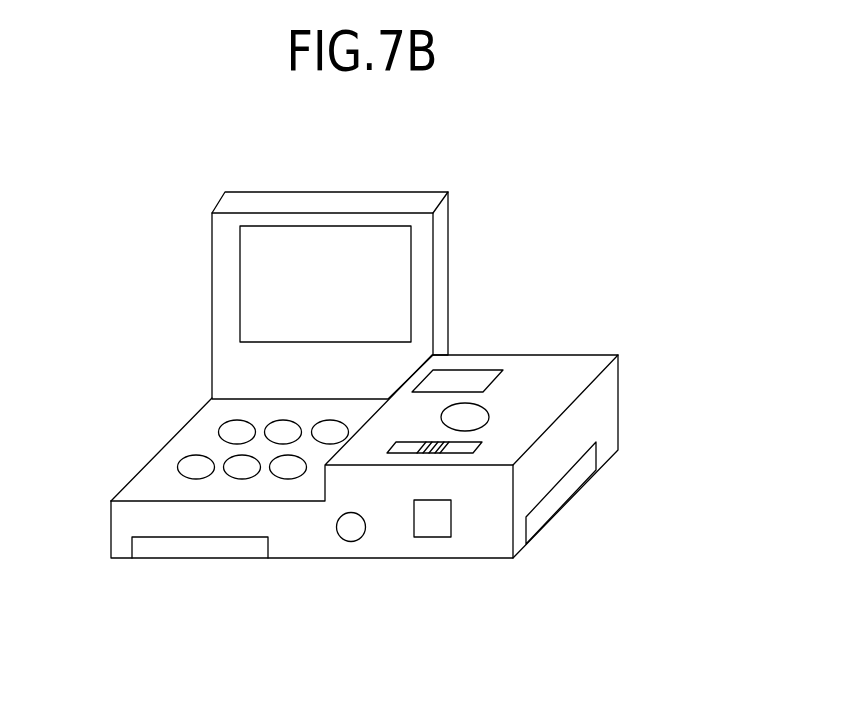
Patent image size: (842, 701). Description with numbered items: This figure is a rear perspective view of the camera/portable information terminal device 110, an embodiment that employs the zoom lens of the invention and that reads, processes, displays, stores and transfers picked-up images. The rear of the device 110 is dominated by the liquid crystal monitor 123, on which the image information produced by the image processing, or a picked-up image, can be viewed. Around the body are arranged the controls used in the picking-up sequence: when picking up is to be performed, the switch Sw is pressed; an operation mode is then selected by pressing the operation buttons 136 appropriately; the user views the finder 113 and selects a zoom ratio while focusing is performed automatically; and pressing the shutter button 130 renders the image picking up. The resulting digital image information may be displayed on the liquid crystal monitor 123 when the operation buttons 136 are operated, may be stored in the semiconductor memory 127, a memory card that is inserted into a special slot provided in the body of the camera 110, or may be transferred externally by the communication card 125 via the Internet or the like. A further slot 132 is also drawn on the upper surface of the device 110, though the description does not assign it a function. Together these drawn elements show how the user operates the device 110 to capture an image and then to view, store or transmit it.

The camera/portable information terminal device 110 is at (561, 164).
The liquid crystal monitor 123 is at (405, 263).
The card slot 132 is at (467, 375).
The shutter button 130 is at (480, 417).
The operation buttons 136 is at (181, 466).
The communication card 125 is at (560, 500).
The semiconductor memory 127 is at (202, 552).
The switch Sw is at (350, 550).
The finder 113 is at (433, 540).